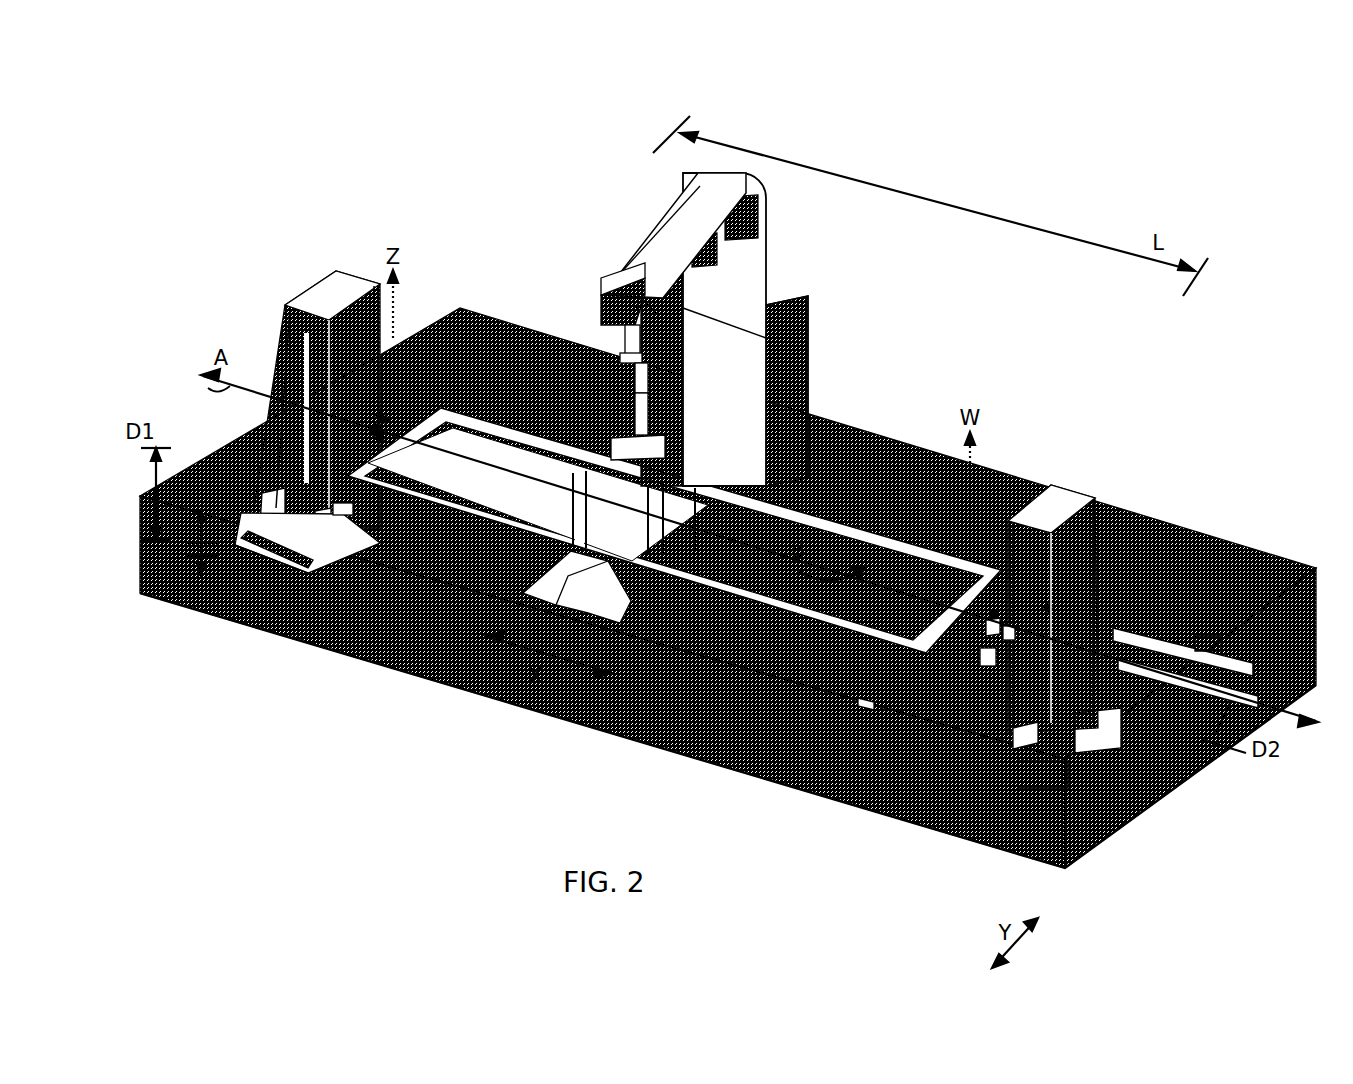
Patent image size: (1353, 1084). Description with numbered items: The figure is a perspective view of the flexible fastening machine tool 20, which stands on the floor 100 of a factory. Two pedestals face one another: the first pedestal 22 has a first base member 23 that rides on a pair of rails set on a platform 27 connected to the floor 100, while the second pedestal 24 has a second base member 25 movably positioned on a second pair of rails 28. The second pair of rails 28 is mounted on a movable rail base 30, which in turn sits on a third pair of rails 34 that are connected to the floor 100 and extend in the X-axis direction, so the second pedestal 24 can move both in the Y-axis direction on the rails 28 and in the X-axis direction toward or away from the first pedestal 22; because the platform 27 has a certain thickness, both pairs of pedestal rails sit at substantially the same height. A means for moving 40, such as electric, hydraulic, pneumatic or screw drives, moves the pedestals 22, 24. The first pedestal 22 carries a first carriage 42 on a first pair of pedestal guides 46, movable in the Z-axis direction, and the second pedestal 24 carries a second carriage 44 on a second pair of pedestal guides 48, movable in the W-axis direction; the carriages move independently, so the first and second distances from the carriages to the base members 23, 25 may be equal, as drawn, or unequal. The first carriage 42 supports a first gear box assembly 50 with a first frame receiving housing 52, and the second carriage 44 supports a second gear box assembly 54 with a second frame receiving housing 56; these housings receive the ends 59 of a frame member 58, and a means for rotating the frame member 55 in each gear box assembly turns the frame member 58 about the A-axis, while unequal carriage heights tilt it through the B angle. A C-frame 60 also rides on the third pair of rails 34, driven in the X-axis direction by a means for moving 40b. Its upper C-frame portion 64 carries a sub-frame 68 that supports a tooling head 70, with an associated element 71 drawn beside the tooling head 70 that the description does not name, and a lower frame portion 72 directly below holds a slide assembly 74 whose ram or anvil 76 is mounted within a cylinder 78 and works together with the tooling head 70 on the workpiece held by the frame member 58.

The flexible fastening machine tool 20 is at (847, 285).
The first pedestal 22 is at (305, 293).
The first base member 23 is at (335, 507).
The second pedestal 24 is at (1062, 495).
The second base member 25 is at (1017, 727).
The platform 27 is at (228, 542).
The second pair of rails 28 is at (1078, 880).
The rail base 30 is at (1150, 690).
The third pair of rails 34 is at (1130, 615).
The means for moving 40 is at (240, 510).
The means for moving 40b is at (770, 405).
The first carriage 42 is at (368, 426).
The second carriage 44 is at (980, 650).
The first pair of pedestal guides 46 is at (326, 359).
The second pair of pedestal guides 48 is at (1049, 555).
The first gear box assembly 50 is at (372, 408).
The first frame receiving housing 52 is at (378, 412).
The second gear box assembly 54 is at (1000, 625).
The means for rotating the frame member 55 is at (372, 408).
The second frame receiving housing 56 is at (985, 620).
The frame member 58 is at (810, 505).
The ends 59 is at (372, 432).
The C-frame 60 is at (745, 250).
The upper C-frame portion 64 is at (665, 197).
The sub-frame 68 is at (610, 270).
The tooling head 70 is at (610, 330).
The cable 71 is at (608, 318).
The lower frame portion 72 is at (640, 418).
The slide assembly 74 is at (613, 400).
The ram or anvil 76 is at (614, 342).
The cylinder 78 is at (610, 377).
The floor 100 is at (810, 760).